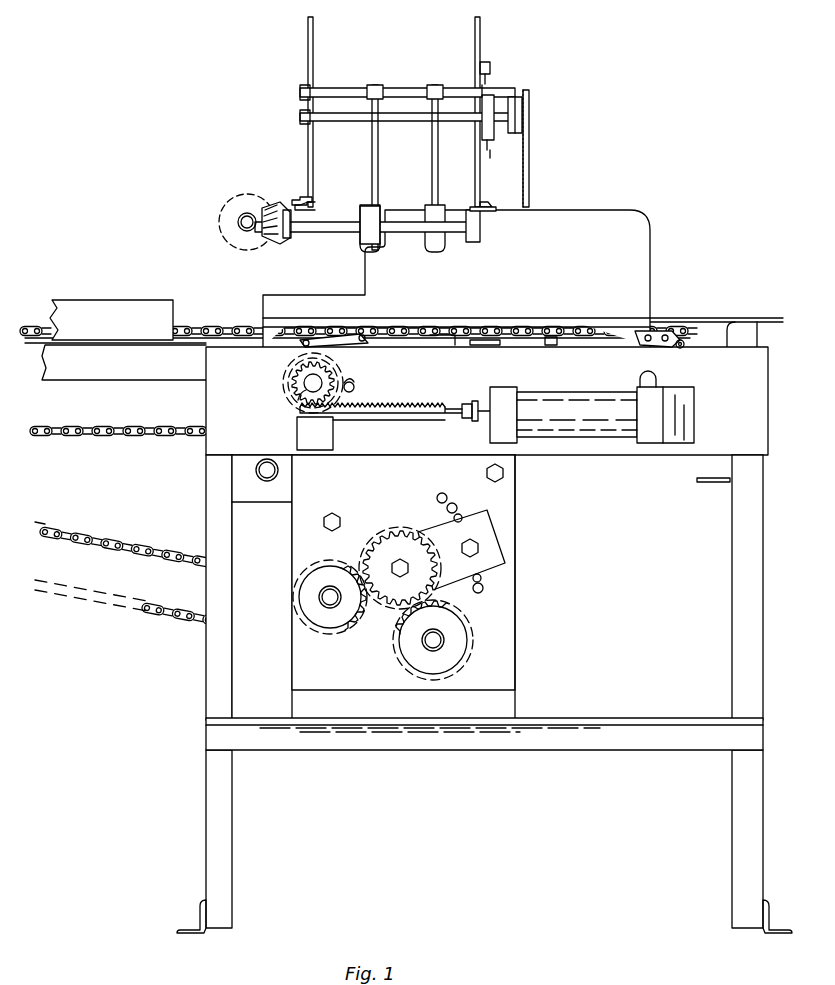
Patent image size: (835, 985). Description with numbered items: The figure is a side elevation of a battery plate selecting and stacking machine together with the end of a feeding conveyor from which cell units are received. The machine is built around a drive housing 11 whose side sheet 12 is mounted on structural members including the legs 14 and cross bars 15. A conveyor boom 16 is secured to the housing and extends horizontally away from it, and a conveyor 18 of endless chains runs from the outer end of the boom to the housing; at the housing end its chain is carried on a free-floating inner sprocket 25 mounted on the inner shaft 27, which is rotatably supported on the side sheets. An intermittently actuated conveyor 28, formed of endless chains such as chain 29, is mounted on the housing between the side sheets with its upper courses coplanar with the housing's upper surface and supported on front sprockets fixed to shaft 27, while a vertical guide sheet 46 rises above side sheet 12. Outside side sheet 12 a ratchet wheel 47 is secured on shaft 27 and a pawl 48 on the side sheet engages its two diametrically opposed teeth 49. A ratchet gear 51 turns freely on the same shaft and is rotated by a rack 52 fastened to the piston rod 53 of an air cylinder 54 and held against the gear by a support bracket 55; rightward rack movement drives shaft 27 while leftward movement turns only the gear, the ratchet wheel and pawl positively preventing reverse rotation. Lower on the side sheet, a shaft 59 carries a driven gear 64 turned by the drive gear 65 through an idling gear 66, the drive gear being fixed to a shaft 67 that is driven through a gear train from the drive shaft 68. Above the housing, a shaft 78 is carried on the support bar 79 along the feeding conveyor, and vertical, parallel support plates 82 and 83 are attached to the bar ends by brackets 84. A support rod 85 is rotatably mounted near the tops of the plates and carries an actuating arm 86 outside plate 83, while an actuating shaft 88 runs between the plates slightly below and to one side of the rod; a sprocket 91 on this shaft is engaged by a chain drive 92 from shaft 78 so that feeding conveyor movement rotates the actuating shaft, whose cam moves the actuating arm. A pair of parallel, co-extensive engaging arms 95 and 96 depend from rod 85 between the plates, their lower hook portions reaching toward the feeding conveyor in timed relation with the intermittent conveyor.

The drive housing 11 is at (188, 691).
The side sheet 12 is at (203, 460).
The legs 14 is at (232, 810).
The cross bars 15 is at (562, 750).
The conveyor boom 16 is at (69, 390).
The conveyor 18 is at (196, 325).
The inner sprocket 25 is at (303, 346).
The inner shaft 27 is at (325, 385).
The intermittently actuated conveyor 28 is at (703, 336).
The endless chain 29 is at (665, 330).
The vertical guide sheet 46 is at (640, 232).
The ratchet wheel 47 is at (290, 372).
The pawl 48 is at (355, 387).
The teeth 49 is at (296, 390).
The ratchet gear 51 is at (298, 402).
The rack 52 is at (403, 408).
The piston rod 53 is at (480, 408).
The air cylinder 54 is at (548, 400).
The support bracket 55 is at (334, 437).
The shaft 59 is at (440, 634).
The driven gear 64 is at (448, 655).
The drive gear 65 is at (320, 572).
The idling gear 66 is at (398, 540).
The shaft 67 is at (337, 603).
The drive shaft 68 is at (266, 480).
The shaft 78 is at (332, 222).
The support bar 79 is at (290, 240).
The support plate 82 is at (314, 45).
The support plate 83 is at (480, 40).
The brackets 84 is at (297, 200).
The support rod 85 is at (331, 91).
The actuating arm 86 is at (490, 150).
The actuating shaft 88 is at (394, 120).
The sprocket 91 is at (516, 96).
The chain drive 92 is at (528, 180).
The engaging arm 95 is at (376, 174).
The engaging arm 96 is at (433, 176).